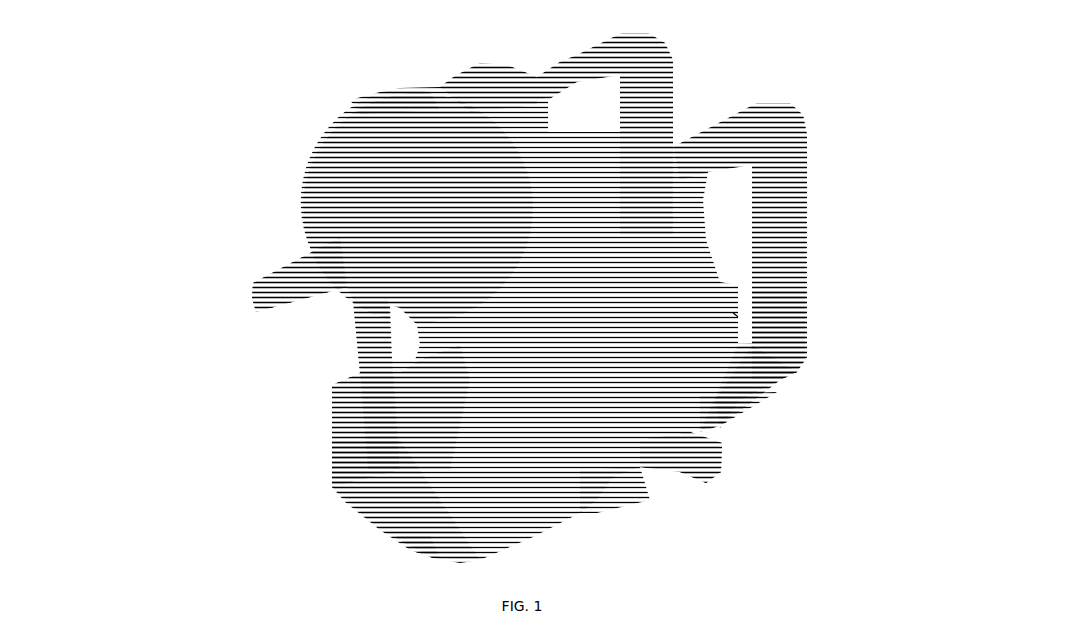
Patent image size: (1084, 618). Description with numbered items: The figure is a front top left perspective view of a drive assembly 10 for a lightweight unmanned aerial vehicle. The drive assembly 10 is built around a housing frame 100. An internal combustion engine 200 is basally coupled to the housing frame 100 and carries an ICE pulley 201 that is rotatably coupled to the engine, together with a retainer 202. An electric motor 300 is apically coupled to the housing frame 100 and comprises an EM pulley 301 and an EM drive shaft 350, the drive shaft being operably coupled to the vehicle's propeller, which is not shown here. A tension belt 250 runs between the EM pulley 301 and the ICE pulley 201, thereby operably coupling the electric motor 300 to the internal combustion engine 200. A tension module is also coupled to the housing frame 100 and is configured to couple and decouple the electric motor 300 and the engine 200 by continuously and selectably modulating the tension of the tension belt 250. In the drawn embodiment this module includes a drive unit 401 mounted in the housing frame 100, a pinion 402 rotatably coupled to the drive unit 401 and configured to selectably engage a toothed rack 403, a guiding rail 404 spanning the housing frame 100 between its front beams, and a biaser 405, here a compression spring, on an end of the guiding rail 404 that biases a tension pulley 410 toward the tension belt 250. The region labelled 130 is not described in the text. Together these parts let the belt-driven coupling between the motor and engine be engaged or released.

The drive assembly 10 is at (178, 178).
The housing frame 100 is at (807, 243).
The gear portion 130 is at (447, 82).
The internal combustion engine 200 is at (667, 103).
The ICE pulley 201 is at (343, 487).
The retainer 202 is at (332, 427).
The tension belt 250 is at (360, 352).
The electric motor 300 is at (330, 137).
The EM pulley 301 is at (373, 108).
The EM drive shaft 350 is at (250, 293).
The drive unit 401 is at (807, 330).
The pinion 402 is at (797, 370).
The toothed rack 403 is at (775, 388).
The guiding rail 404 is at (677, 467).
The biaser 405 is at (623, 470).
The tension pulley 410 is at (403, 545).